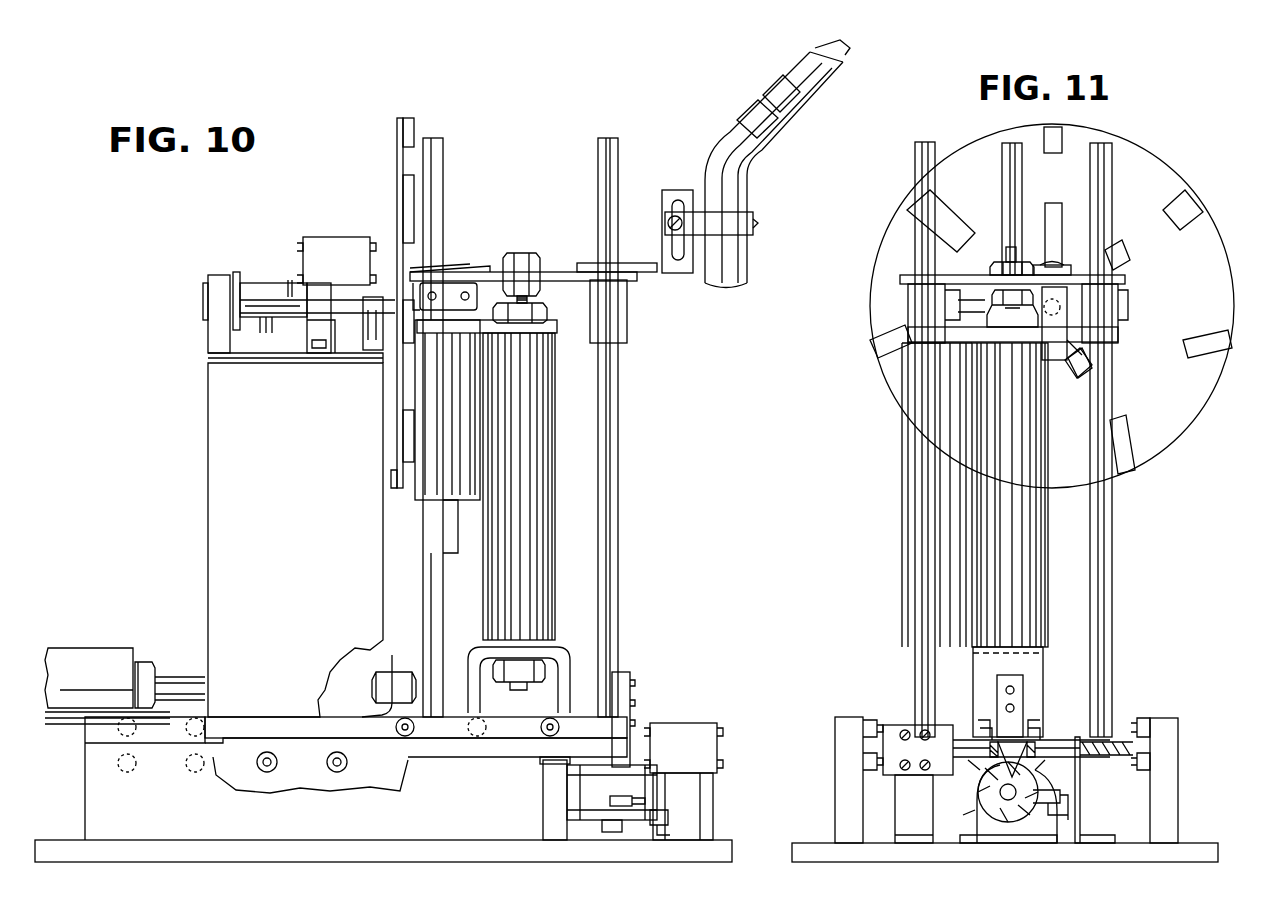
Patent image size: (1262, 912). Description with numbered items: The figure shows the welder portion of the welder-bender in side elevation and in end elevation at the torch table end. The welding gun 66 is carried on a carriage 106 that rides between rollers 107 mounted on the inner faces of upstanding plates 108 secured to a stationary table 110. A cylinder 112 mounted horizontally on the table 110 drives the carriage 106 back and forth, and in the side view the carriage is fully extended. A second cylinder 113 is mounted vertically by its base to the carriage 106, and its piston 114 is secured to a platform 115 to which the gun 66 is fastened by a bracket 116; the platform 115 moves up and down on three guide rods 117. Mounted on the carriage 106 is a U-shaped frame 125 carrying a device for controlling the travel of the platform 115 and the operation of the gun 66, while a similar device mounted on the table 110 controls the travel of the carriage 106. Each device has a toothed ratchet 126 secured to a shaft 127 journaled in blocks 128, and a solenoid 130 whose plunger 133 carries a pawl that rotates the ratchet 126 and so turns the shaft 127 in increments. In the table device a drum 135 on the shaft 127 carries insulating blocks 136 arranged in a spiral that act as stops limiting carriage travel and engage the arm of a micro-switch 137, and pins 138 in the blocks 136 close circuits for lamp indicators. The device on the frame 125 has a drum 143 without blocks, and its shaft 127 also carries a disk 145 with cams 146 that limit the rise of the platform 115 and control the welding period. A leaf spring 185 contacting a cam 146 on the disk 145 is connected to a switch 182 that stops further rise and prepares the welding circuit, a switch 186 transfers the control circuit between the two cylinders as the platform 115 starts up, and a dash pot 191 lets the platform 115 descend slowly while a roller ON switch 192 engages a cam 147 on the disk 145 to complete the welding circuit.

In FIG. 10, the gun 66 is at (800, 80).
In FIG. 10, the carriage 106 is at (242, 745).
In FIG. 11, the carriage 106 is at (1113, 740).
In FIG. 11, the rollers 107 is at (865, 762).
In FIG. 11, the upstanding plates 108 is at (1172, 772).
In FIG. 10, the table 110 is at (392, 845).
In FIG. 11, the table 110 is at (1185, 847).
In FIG. 10, the cylinder 112 is at (86, 648).
In FIG. 10, the cylinder 113 is at (556, 567).
In FIG. 11, the cylinder 113 is at (1050, 600).
In FIG. 10, the piston 114 is at (535, 300).
In FIG. 10, the platform 115 is at (560, 272).
In FIG. 11, the platform 115 is at (900, 278).
In FIG. 10, the bracket 116 is at (672, 268).
In FIG. 11, the bracket 116 is at (1005, 252).
In FIG. 10, the guide rods 117 is at (443, 165).
In FIG. 11, the guide rods 117 is at (980, 178).
In FIG. 10, the U-shaped frame 125 is at (210, 528).
In FIG. 10, the ratchet 126 is at (335, 330).
In FIG. 11, the ratchet 126 is at (1032, 783).
In FIG. 10, the shaft 127 is at (378, 345).
In FIG. 11, the shaft 127 is at (1010, 798).
In FIG. 10, the blocks 128 is at (212, 325).
In FIG. 10, the solenoid 130 is at (330, 243).
In FIG. 11, the solenoid 130 is at (895, 725).
In FIG. 11, the plunger 133 is at (965, 742).
In FIG. 10, the drum 135 is at (583, 795).
In FIG. 11, the drum 135 is at (978, 782).
In FIG. 10, the blocks 136 is at (632, 803).
In FIG. 10, the micro-switch 137 is at (625, 677).
In FIG. 10, the pins 138 is at (660, 818).
In FIG. 10, the drum 143 is at (277, 287).
In FIG. 10, the disk 145 is at (395, 165).
In FIG. 11, the disk 145 is at (1138, 153).
In FIG. 10, the cams 146 is at (414, 126).
In FIG. 11, the cams 146 is at (1195, 202).
In FIG. 11, the cam 147 is at (1057, 205).
In FIG. 11, the switch 182 is at (1128, 302).
In FIG. 10, the leaf spring 185 is at (447, 267).
In FIG. 11, the leaf spring 185 is at (1078, 268).
In FIG. 10, the switch 186 is at (470, 290).
In FIG. 11, the switch 186 is at (970, 315).
In FIG. 10, the dash pot 191 is at (432, 483).
In FIG. 11, the dash pot 191 is at (937, 495).
In FIG. 11, the roller ON switch 192 is at (1080, 347).